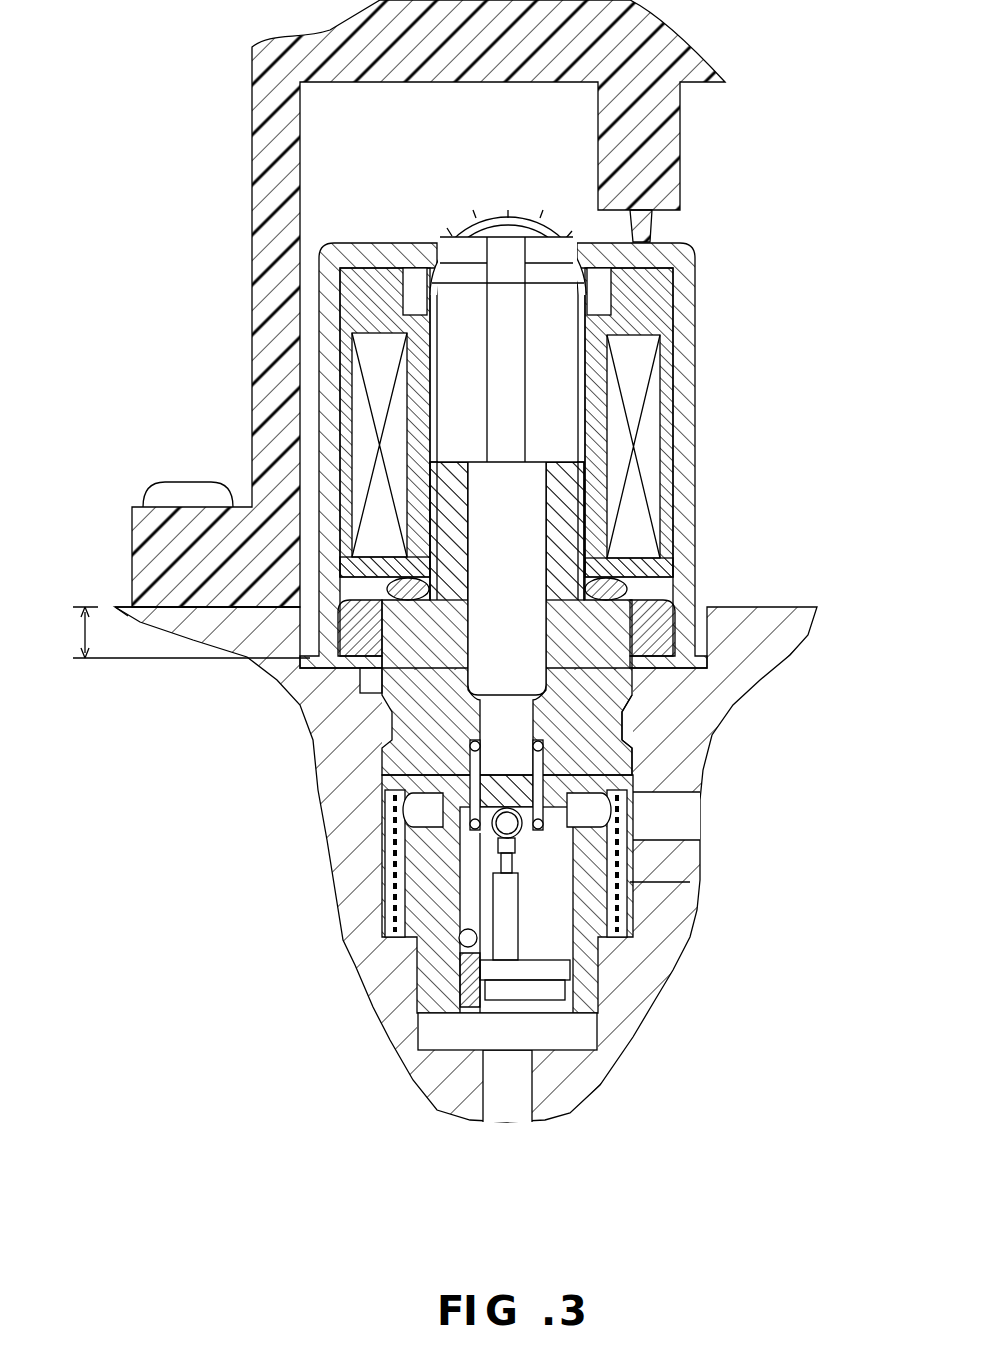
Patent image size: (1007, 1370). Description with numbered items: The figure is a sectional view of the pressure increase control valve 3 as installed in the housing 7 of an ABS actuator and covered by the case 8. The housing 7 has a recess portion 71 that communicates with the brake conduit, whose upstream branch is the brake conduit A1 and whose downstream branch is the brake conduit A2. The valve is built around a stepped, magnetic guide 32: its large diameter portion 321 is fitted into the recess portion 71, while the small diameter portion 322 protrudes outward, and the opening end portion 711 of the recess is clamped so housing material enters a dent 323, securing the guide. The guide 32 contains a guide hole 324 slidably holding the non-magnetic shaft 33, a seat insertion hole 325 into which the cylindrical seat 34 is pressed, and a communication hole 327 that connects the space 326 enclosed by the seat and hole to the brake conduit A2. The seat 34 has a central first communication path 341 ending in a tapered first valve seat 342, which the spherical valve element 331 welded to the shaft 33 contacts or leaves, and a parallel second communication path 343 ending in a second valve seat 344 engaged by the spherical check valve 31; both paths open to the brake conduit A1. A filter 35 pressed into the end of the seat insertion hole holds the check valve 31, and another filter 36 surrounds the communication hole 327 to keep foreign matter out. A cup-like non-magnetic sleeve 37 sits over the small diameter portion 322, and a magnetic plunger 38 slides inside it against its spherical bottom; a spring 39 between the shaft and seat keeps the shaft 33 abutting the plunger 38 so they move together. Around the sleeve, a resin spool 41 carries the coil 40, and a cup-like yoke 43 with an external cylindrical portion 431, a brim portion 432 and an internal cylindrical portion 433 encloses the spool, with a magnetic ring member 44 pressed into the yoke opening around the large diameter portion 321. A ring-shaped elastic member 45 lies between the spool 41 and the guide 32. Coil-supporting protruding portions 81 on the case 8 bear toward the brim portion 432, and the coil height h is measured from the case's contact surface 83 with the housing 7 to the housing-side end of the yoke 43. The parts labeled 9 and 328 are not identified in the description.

The pressure increase control valve 3 is at (708, 278).
The housing 7 is at (322, 712).
The case 8 is at (668, 46).
The seal member 9 is at (170, 484).
The check valve 31 is at (417, 953).
The guide 32 is at (610, 634).
The shaft 33 is at (512, 660).
The seat 34 is at (552, 928).
The filter 35 is at (420, 1017).
The filter 36 is at (393, 798).
The sleeve 37 is at (476, 222).
The plunger 38 is at (550, 332).
The spring 39 is at (453, 780).
The coil 40 is at (348, 447).
The spool 41 is at (348, 477).
The yoke 43 is at (333, 405).
The ring member 44 is at (295, 608).
The elastic member 45 is at (390, 590).
The recess portion 71 is at (387, 836).
The coil-supporting protruding portion 81 is at (640, 220).
The contact surface 83 is at (160, 606).
The large diameter portion 321 is at (612, 708).
The small diameter portion 322 is at (557, 507).
The dent 323 is at (624, 730).
The guide hole 324 is at (545, 540).
The seat insertion hole 325 is at (513, 945).
The space 326 is at (552, 828).
The communication hole 327 is at (588, 800).
The flange block 328 is at (660, 612).
The valve element 331 is at (512, 825).
The first communication path 341 is at (565, 990).
The first valve seat 342 is at (560, 875).
The second communication path 343 is at (468, 872).
The second valve seat 344 is at (455, 915).
The external cylindrical portion 431 is at (330, 370).
The brim portion 432 is at (348, 243).
The internal cylindrical portion 433 is at (417, 289).
The opening end portion 711 is at (310, 686).
The coil height h is at (183, 632).
The brake conduit A1 is at (545, 1118).
The brake conduit A2 is at (690, 842).